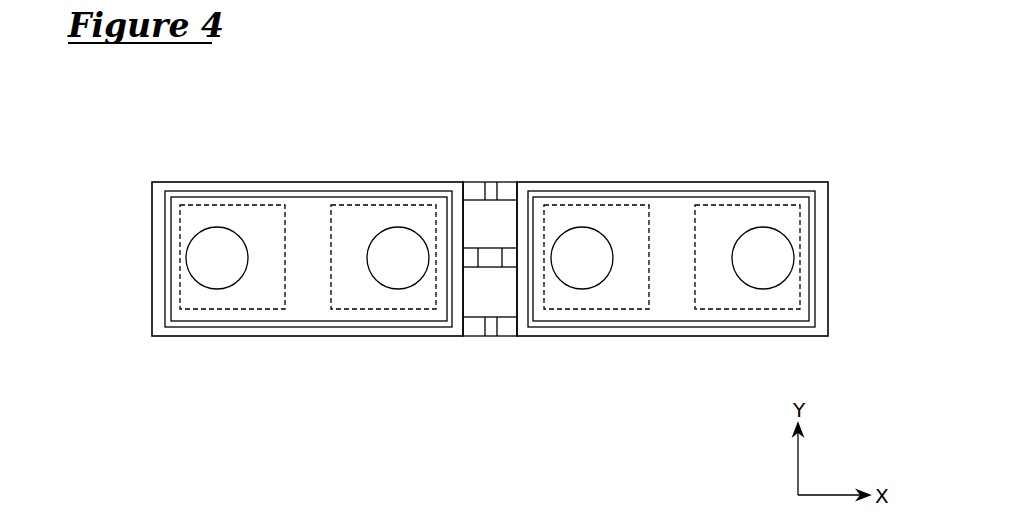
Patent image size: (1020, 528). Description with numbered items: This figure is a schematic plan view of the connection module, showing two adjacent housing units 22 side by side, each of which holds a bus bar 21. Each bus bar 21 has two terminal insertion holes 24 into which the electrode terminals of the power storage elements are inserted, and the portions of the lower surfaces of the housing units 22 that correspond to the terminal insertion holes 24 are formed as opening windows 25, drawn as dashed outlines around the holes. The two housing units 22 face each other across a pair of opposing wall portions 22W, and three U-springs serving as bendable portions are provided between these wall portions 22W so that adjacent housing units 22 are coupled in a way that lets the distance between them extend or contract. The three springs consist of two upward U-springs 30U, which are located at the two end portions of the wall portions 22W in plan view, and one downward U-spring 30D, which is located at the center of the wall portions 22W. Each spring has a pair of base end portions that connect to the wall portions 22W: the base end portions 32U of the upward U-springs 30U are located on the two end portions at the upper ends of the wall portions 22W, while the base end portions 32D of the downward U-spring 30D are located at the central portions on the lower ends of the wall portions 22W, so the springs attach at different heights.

The bus bar 21 is at (305, 225).
The housing unit 22 is at (210, 337).
The wall portion 22W is at (461, 234).
The terminal insertion hole 24 is at (191, 245).
The opening window 25 is at (622, 205).
The upward U-spring 30U is at (477, 194).
The downward U-spring 30D is at (488, 268).
The base end portion of upward U-spring 32U is at (472, 192).
The base end portion of downward U-spring 32D is at (472, 268).